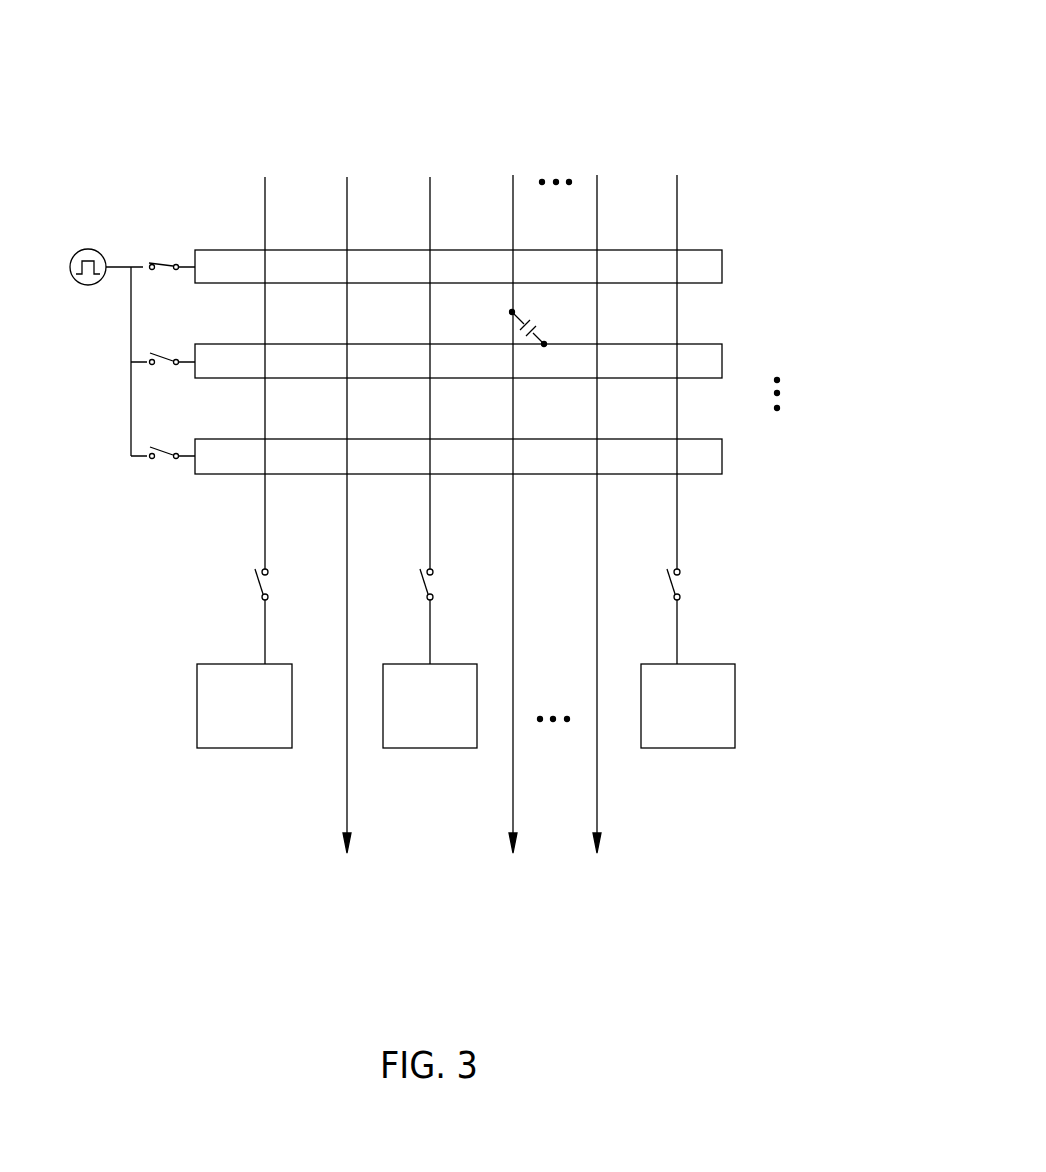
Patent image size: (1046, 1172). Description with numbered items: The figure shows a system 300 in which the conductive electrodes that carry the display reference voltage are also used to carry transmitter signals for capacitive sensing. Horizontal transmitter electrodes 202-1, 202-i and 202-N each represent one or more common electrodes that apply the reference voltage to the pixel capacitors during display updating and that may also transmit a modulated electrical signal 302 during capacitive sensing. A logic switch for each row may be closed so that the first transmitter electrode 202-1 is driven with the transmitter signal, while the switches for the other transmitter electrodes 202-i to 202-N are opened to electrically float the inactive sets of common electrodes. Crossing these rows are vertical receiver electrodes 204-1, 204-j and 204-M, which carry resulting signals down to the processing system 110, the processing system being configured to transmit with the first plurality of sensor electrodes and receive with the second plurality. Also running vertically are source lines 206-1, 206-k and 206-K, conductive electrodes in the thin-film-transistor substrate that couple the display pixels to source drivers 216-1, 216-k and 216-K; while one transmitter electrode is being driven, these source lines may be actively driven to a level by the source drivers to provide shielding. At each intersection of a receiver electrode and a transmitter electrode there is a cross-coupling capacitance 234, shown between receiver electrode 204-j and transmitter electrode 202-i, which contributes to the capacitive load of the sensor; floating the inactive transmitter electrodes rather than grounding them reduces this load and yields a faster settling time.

The system 300 is at (629, 45).
The modulated electrical signal 302 is at (98, 250).
The first transmitter electrode 202-1 is at (722, 265).
The transmitter electrode 202-i is at (722, 360).
The transmitter electrode 202-N is at (722, 455).
The receiver electrode 204-1 is at (347, 177).
The receiver electrode 204-j is at (513, 175).
The receiver electrode 204-M is at (597, 175).
The source line 206-1 is at (265, 177).
The source line 206-k is at (430, 177).
The source line 206-K is at (677, 175).
The source driver 216-1 is at (244, 706).
The source driver 216-k is at (430, 706).
The source driver 216-K is at (688, 706).
The capacitance 234 is at (538, 334).
The processing system 110 is at (474, 887).